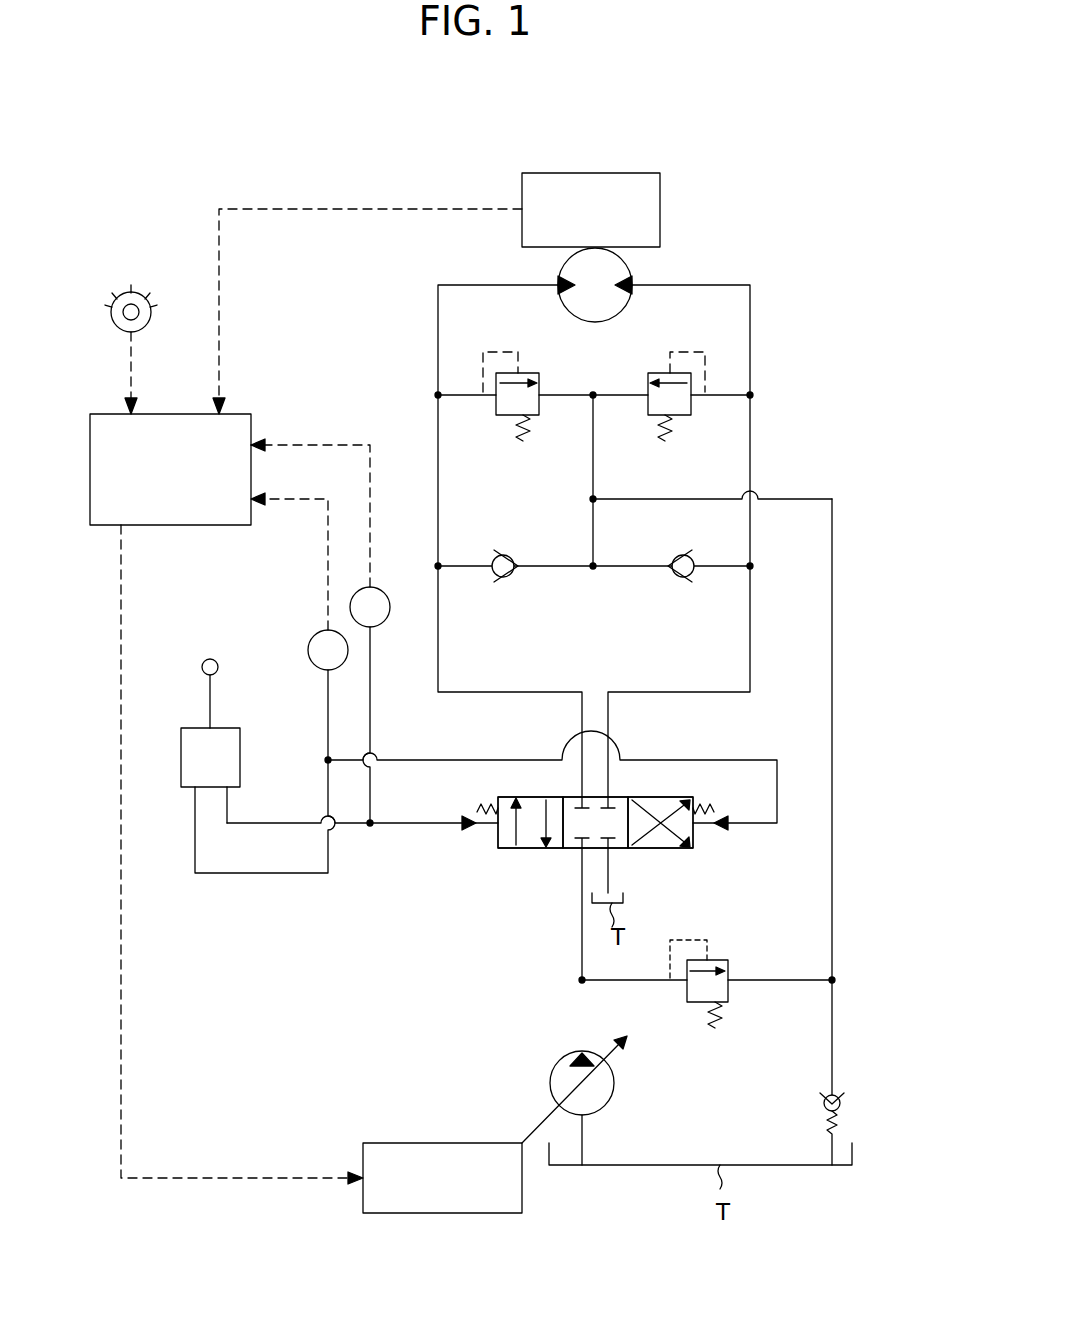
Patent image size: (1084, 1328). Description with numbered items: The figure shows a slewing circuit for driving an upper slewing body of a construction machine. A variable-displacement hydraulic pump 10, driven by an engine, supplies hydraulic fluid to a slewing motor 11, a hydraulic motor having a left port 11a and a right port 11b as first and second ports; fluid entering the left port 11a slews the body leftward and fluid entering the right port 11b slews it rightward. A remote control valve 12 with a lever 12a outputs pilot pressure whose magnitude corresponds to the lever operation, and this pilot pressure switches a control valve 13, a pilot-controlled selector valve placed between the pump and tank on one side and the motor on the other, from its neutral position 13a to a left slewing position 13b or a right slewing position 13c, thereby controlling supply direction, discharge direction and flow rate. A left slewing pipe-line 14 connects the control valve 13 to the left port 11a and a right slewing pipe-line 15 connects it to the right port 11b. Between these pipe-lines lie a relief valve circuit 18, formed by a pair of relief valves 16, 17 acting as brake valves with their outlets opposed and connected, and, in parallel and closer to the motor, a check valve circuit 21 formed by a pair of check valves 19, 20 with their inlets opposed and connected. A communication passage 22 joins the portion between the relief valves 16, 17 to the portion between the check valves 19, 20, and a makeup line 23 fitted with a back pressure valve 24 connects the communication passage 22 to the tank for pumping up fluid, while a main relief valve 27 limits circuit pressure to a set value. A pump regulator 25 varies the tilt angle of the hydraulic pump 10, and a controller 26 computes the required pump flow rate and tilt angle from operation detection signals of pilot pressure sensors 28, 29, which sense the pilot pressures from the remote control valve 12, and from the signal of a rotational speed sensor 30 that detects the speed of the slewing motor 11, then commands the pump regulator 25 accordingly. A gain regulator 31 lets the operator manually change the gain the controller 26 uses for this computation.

The hydraulic pump 10 is at (605, 1102).
The slewing motor 11 is at (620, 311).
The left port 11a is at (565, 280).
The right port 11b is at (625, 280).
The remote control valve 12 is at (240, 771).
The lever 12a is at (210, 700).
The control valve 13 is at (492, 862).
The neutral position 13a is at (618, 800).
The left slewing position 13b is at (530, 850).
The right slewing position 13c is at (690, 840).
The left slewing pipe-line 14 is at (436, 358).
The right slewing pipe-line 15 is at (752, 346).
The relief valve 16 is at (502, 416).
The relief valve 17 is at (688, 415).
The relief valve circuit 18 is at (614, 396).
The check valve 19 is at (503, 552).
The check valve 20 is at (681, 578).
The check valve circuit 21 is at (551, 567).
The communication passage 22 is at (592, 479).
The makeup line 23 is at (832, 712).
The back pressure valve 24 is at (842, 1104).
The pump regulator 25 is at (413, 1143).
The controller 26 is at (172, 525).
The main relief valve 27 is at (721, 959).
The pilot pressure sensor 28 is at (309, 638).
The pilot pressure sensor 29 is at (376, 592).
The rotational speed sensor 30 is at (572, 173).
The gain regulator 31 is at (113, 322).